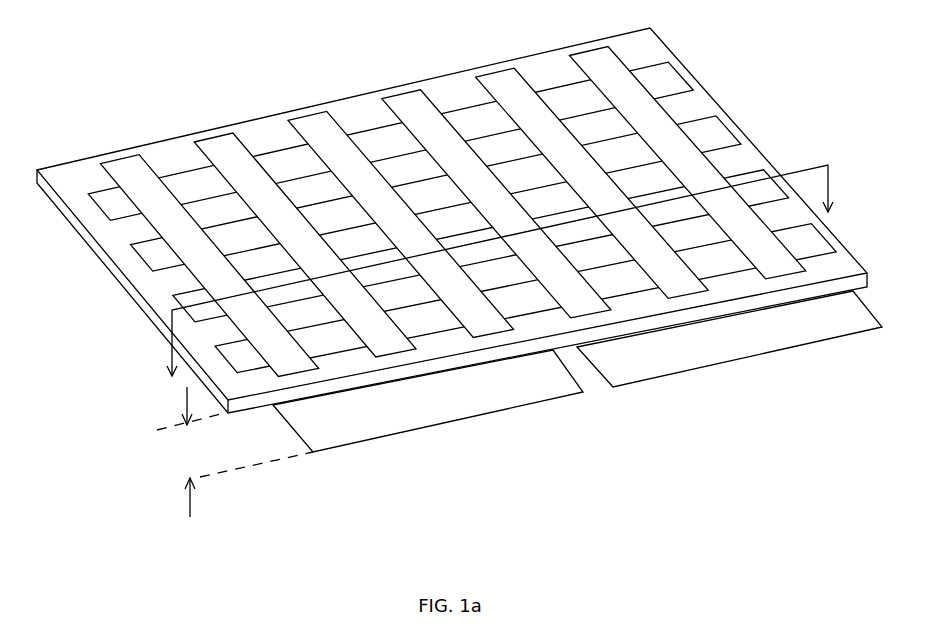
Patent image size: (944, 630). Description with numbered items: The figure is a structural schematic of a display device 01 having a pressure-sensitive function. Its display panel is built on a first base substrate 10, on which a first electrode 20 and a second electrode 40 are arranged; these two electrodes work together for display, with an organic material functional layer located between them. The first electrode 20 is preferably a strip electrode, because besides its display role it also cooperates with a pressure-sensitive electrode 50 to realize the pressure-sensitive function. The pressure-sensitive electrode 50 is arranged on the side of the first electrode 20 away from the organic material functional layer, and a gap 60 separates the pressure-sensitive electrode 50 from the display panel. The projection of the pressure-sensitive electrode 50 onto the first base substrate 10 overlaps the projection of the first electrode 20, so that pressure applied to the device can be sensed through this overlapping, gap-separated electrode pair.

The display device 01 is at (27, 55).
The first base substrate 10 is at (660, 37).
The first electrode 20 is at (670, 82).
The second electrode 40 is at (653, 115).
The pressure-sensitive electrode 50 is at (366, 413).
The gap 60 is at (235, 452).